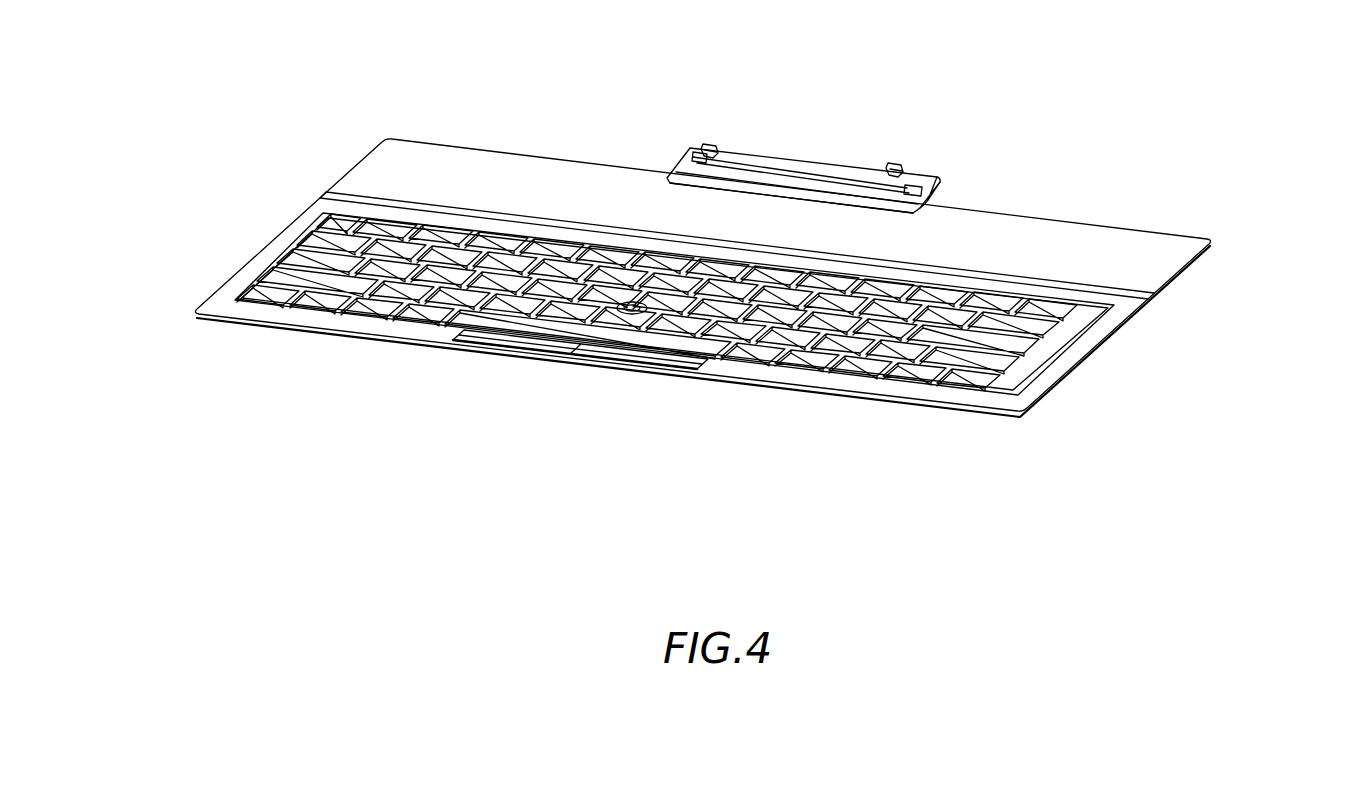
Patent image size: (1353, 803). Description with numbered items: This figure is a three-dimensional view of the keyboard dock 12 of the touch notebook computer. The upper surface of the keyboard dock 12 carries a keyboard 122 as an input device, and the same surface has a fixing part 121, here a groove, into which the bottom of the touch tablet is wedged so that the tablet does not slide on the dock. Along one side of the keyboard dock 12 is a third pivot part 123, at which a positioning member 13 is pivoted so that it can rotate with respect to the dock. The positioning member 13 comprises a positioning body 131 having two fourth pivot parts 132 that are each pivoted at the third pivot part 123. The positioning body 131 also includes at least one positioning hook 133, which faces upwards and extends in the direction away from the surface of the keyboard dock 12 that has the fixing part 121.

The keyboard dock 12 is at (258, 250).
The fixing part 121 is at (1152, 295).
The keyboard 122 is at (1062, 358).
The third pivot part 123 is at (788, 183).
The positioning member 13 is at (821, 120).
The positioning body 131 is at (938, 178).
The fourth pivot parts 132 is at (695, 163).
The positioning hook 133 is at (712, 142).